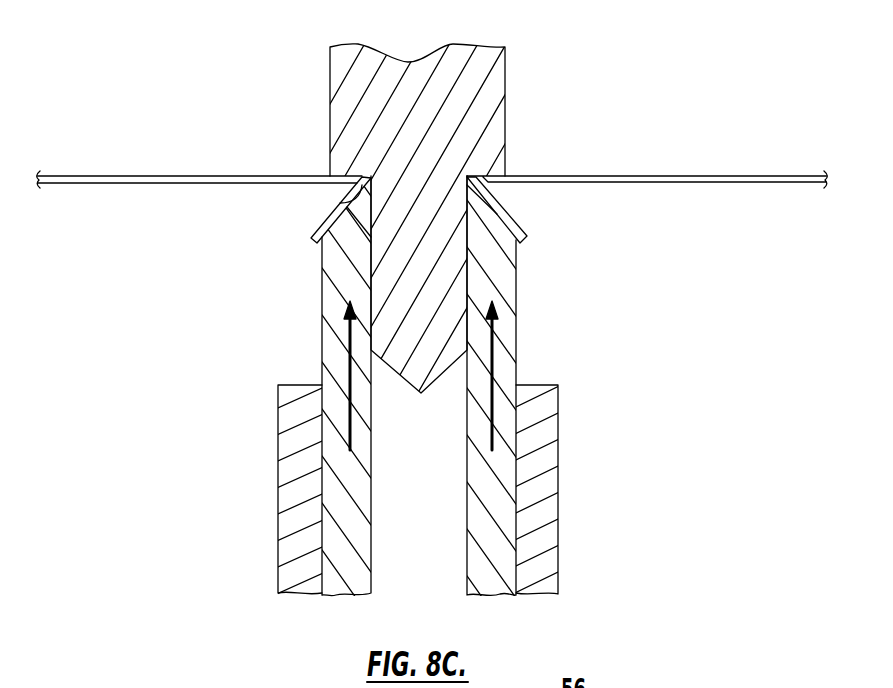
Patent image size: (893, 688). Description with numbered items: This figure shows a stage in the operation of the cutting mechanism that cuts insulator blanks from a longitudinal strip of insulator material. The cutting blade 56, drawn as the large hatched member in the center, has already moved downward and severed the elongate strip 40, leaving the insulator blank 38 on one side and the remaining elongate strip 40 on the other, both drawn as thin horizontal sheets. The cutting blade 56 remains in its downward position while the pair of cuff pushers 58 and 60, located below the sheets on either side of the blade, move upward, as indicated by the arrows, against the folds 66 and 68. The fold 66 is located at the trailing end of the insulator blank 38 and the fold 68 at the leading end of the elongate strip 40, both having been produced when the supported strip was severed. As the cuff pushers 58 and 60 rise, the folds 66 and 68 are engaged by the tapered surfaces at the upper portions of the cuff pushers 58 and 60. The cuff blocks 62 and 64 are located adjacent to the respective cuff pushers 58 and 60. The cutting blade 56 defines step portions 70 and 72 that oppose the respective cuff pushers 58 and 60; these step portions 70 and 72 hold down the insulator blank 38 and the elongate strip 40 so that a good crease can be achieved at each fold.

The insulator blank 38 is at (115, 176).
The elongate strip 40 is at (697, 174).
The cutting blade 56 is at (505, 100).
The cuff pusher 58 is at (322, 295).
The cuff pusher 60 is at (516, 330).
The cuff block 62 is at (278, 471).
The cuff block 64 is at (558, 458).
The fold 66 is at (321, 215).
The fold 68 is at (521, 218).
The step portion 70 is at (320, 198).
The step portion 72 is at (518, 200).